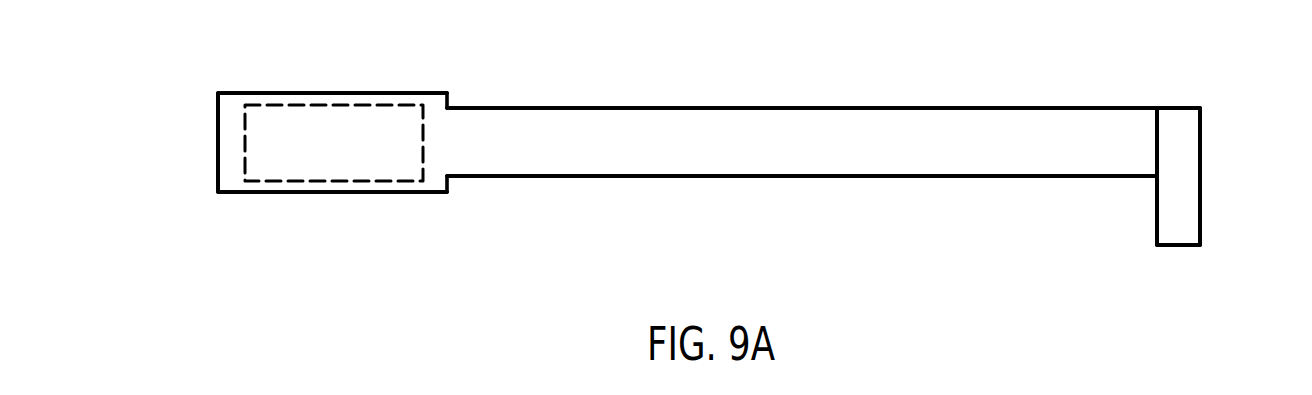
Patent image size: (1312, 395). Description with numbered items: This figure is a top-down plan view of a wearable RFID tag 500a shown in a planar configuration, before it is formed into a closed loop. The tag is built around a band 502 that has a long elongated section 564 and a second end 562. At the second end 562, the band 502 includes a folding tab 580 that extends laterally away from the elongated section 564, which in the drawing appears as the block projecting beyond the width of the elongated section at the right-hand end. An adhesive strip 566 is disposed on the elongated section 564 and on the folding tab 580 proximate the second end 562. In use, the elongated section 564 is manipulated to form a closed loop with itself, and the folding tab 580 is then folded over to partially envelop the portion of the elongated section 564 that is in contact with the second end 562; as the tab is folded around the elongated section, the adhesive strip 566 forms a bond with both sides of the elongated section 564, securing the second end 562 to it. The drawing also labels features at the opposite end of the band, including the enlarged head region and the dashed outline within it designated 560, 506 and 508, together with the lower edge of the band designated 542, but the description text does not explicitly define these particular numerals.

The RFID tag 500a is at (117, 80).
The band 502 is at (822, 108).
The housing portion 560 is at (218, 125).
The housing 506 is at (237, 155).
The electronics module 508 is at (348, 152).
The elongated section 564 is at (567, 125).
The bottom surface 542 is at (662, 177).
The adhesive strip 566 is at (1178, 176).
The second end 562 is at (1202, 177).
The folding tab 580 is at (1157, 217).